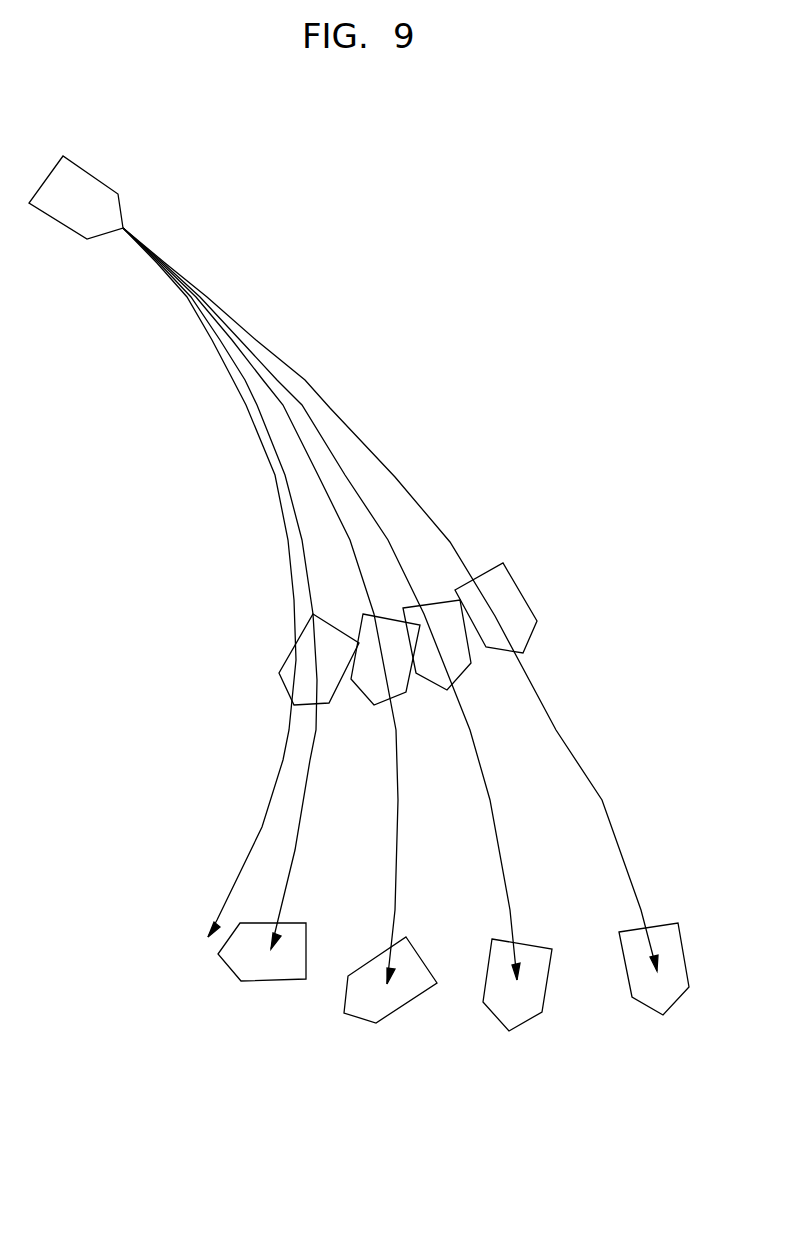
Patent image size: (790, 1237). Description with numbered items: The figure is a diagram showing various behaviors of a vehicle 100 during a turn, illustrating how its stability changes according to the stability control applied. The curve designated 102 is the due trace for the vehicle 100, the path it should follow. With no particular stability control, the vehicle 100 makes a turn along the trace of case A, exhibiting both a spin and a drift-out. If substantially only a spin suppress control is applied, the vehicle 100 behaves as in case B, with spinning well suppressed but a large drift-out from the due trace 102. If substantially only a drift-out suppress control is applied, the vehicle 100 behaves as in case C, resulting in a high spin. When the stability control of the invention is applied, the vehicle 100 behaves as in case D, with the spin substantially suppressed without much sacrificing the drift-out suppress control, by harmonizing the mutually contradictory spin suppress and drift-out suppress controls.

The vehicle 100 is at (79, 165).
The due trace 102 is at (262, 827).
The case A is at (390, 1007).
The case B is at (654, 998).
The case C is at (262, 1000).
The case D is at (517, 1008).